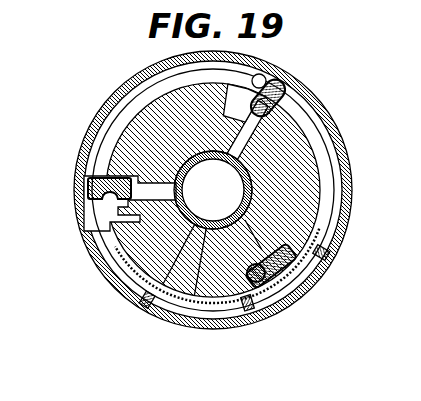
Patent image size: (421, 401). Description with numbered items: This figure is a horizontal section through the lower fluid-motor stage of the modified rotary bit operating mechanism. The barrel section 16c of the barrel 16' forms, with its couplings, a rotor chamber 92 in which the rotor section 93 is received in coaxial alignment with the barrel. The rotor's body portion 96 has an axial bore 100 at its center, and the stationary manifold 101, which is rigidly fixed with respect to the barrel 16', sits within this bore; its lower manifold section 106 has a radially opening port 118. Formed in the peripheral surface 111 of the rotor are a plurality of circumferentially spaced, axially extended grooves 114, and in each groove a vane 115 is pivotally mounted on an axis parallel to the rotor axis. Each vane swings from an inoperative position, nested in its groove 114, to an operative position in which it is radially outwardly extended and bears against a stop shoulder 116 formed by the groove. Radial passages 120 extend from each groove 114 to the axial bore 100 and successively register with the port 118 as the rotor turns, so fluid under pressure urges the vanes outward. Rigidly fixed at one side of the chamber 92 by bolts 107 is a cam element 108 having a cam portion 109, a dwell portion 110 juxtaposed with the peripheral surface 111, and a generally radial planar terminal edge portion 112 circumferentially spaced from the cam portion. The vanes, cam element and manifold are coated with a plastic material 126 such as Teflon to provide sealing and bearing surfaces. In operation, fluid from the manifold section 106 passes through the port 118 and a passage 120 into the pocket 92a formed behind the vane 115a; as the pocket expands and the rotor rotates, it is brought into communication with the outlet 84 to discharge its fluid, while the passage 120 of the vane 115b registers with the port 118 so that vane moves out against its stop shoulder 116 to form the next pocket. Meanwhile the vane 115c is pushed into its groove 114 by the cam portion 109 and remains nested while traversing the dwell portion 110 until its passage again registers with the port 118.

The rotor chamber 92 is at (135, 101).
The body portion 96 is at (162, 105).
The rotor section 93 is at (126, 125).
The vane 115a is at (108, 177).
The vane 115b is at (296, 262).
The vane 115c is at (272, 85).
The vanes 115 is at (88, 196).
The barrel 16' is at (51, 131).
The barrel section 16c is at (334, 124).
The stop shoulder 116 is at (112, 174).
The plastic material 126 is at (89, 181).
The grooves 114 is at (262, 76).
The pocket 92a is at (100, 256).
The terminal edge portion 112 is at (100, 262).
The bolts 107 is at (147, 317).
The manifold 101 is at (170, 308).
The manifold section 106 is at (196, 312).
The dwell portion 110 is at (220, 318).
The cam element 108 is at (292, 283).
The radial passages 120 is at (258, 228).
The cam portion 109 is at (352, 196).
The peripheral surface 111 is at (333, 170).
The outlet 84 is at (340, 148).
The port 118 is at (191, 162).
The axial bore 100 is at (253, 187).